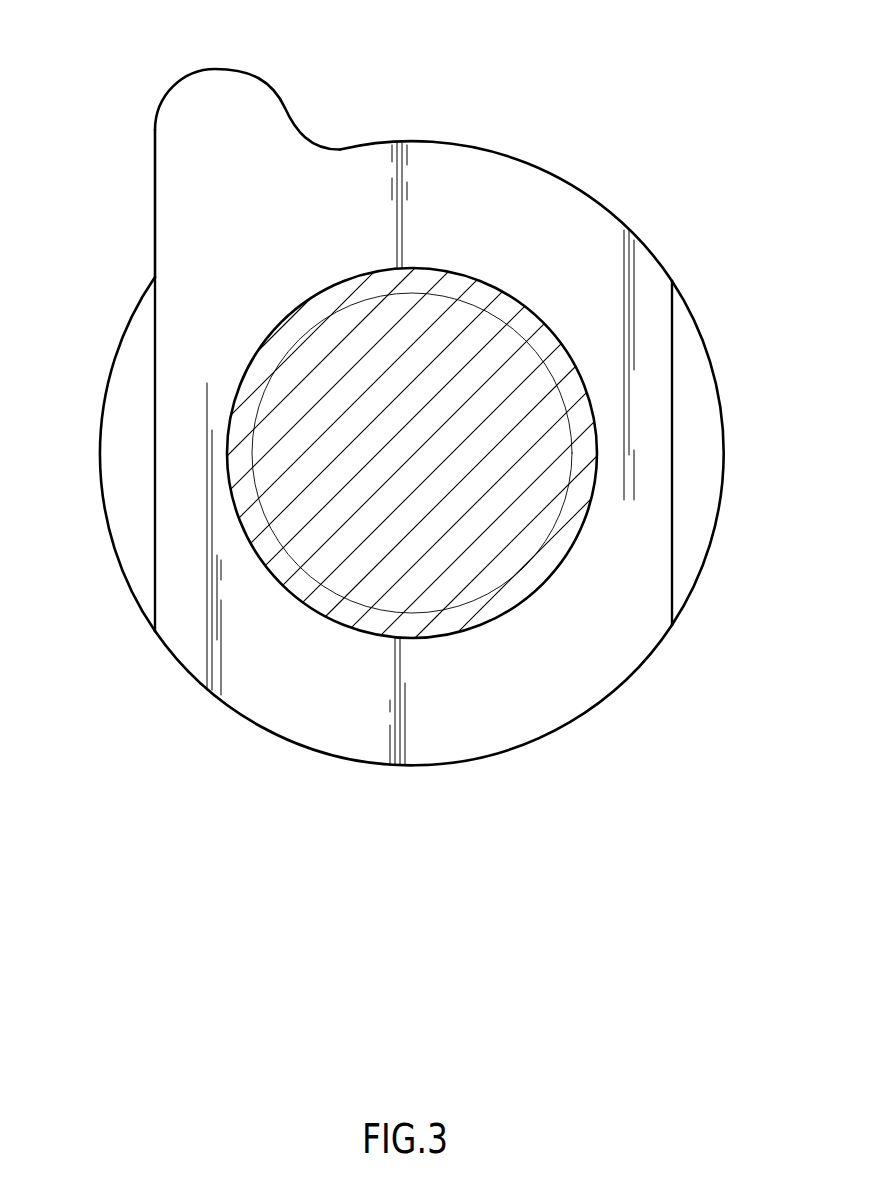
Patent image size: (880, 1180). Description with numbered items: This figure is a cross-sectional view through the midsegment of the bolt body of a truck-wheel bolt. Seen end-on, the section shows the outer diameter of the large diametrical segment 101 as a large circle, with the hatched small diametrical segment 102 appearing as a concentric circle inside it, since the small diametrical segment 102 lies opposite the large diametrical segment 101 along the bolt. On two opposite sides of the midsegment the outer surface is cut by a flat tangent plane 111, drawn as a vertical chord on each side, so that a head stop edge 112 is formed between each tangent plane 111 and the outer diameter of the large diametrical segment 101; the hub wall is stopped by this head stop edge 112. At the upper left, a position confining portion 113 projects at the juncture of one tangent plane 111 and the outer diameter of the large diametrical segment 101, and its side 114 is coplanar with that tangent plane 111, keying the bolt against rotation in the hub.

The large diametrical segment 101 is at (353, 765).
The small diametrical segment 102 is at (473, 330).
The tangent plane 111 is at (153, 402).
The head stop edge 112 is at (125, 517).
The position confining portion 113 is at (213, 73).
The side of position confining portion 114 is at (155, 207).